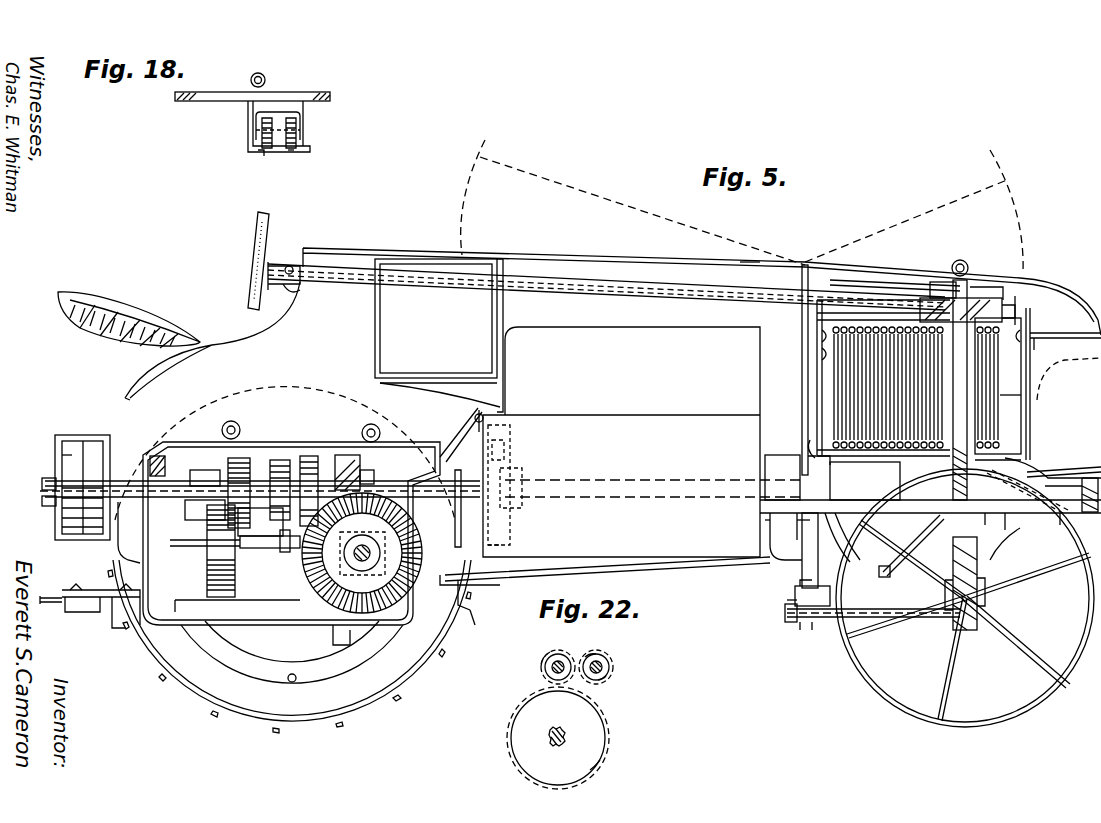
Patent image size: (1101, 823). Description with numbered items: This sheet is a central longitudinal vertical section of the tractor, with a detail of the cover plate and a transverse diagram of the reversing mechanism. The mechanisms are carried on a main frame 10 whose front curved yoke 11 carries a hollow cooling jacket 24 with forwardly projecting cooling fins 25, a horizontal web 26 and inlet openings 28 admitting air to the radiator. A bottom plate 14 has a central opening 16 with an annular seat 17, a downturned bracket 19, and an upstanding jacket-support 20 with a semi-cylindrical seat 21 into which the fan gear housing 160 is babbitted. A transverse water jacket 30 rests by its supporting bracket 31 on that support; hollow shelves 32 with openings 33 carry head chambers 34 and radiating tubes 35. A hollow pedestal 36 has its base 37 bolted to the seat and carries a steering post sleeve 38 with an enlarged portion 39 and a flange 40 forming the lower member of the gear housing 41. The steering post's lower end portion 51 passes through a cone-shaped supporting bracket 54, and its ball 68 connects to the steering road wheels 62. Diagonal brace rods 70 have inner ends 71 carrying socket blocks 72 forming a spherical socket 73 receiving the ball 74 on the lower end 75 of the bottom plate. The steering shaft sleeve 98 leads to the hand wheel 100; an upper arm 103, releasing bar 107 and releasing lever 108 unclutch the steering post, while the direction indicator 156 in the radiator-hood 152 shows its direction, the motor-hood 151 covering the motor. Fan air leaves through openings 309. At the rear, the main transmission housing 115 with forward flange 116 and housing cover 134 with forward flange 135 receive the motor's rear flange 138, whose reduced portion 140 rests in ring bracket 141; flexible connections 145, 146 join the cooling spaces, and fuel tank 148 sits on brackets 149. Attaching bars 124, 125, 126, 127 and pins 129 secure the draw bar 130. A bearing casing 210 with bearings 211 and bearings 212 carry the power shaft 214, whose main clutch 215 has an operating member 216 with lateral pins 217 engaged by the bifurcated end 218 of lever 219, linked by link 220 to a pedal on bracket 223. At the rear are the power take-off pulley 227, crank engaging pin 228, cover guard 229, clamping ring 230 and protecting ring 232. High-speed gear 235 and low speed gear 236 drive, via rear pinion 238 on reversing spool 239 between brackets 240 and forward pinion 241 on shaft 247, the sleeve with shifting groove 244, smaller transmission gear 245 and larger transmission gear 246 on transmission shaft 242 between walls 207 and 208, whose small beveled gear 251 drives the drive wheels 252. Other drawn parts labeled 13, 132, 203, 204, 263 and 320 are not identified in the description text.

In FIG. 5, the main frame 10 is at (773, 515).
In FIG. 5, the front curved yoke 11 is at (1085, 496).
In FIG. 5, the fender 13 is at (1053, 485).
In FIG. 5, the bottom plate 14 is at (1062, 514).
In FIG. 5, the central opening 16 is at (1006, 530).
In FIG. 5, the annular seat 17 is at (1030, 514).
In FIG. 5, the downturned bracket 19 is at (802, 568).
In FIG. 5, the upstanding jacket-support 20 is at (800, 518).
In FIG. 5, the semi-cylindrical seat 21 is at (795, 535).
In FIG. 5, the cooling jacket 24 is at (1031, 412).
In FIG. 5, the cooling fins 25 is at (1090, 440).
In FIG. 5, the horizontal web 26 is at (1050, 360).
In FIG. 5, the inlet openings 28 is at (1085, 336).
In FIG. 5, the water jacket 30 is at (815, 380).
In FIG. 5, the supporting bracket 31 is at (810, 456).
In FIG. 5, the hollow shelves 32 is at (817, 350).
In FIG. 5, the openings 33 is at (817, 332).
In FIG. 5, the head chambers 34 is at (880, 310).
In FIG. 5, the radiating tubes 35 is at (1022, 396).
In FIG. 5, the hollow pedestal 36 is at (998, 462).
In FIG. 5, the base 37 is at (985, 514).
In FIG. 5, the steering post sleeve 38 is at (1000, 378).
In FIG. 5, the enlarged portion 39 is at (1027, 476).
In FIG. 5, the flange 40 is at (1016, 308).
In FIG. 5, the gear housing 41 is at (1020, 298).
In FIG. 5, the lower end portion 51 is at (935, 522).
In FIG. 5, the cone-shaped supporting bracket 54 is at (1000, 552).
In FIG. 5, the steering road wheels 62 is at (1090, 640).
In FIG. 5, the ball 68 is at (886, 578).
In FIG. 5, the diagonal brace rods 70 is at (940, 618).
In FIG. 5, the inner ends 71 is at (788, 622).
In FIG. 5, the socket blocks 72 is at (808, 623).
In FIG. 5, the spherical socket 73 is at (830, 592).
In FIG. 5, the ball 74 is at (790, 603).
In FIG. 5, the lower end 75 is at (798, 586).
In FIG. 5, the steering shaft sleeve 98 is at (289, 265).
In FIG. 5, the steering hand wheel 100 is at (267, 228).
In FIG. 5, the upper arm 103 is at (936, 283).
In FIG. 5, the releasing bar 107 is at (876, 282).
In FIG. 5, the releasing lever 108 is at (284, 284).
In FIG. 5, the main transmission housing 115 is at (400, 612).
In FIG. 5, the forward flange 116 is at (478, 586).
In FIG. 5, the upper front attaching bar 124 is at (128, 591).
In FIG. 5, the lower front attaching bar 125 is at (102, 600).
In FIG. 5, the upper rear attaching bar 126 is at (75, 585).
In FIG. 5, the lower rear attaching bar 127 is at (70, 604).
In FIG. 5, the pins 129 is at (124, 585).
In FIG. 5, the draw bar 130 is at (112, 614).
In FIG. 5, the battery support box 132 is at (865, 481).
In FIG. 5, the housing cover 134 is at (309, 456).
In FIG. 5, the forward flange 135 is at (470, 412).
In FIG. 5, the rear flange 138 is at (495, 578).
In FIG. 5, the reduced portion 140 is at (766, 462).
In FIG. 5, the ring bracket 141 is at (812, 440).
In FIG. 5, the flexible connection 145 is at (745, 300).
In FIG. 5, the flexible connection 146 is at (860, 535).
In FIG. 5, the fuel tank 148 is at (439, 335).
In FIG. 5, the brackets 149 is at (470, 385).
In FIG. 5, the motor-hood 151 is at (758, 266).
In FIG. 5, the radiator-hood 152 is at (975, 278).
In FIG. 5, the direction indicator 156 is at (963, 262).
In FIG. 5, the fan gear housing 160 is at (370, 252).
In FIG. 5, the bolt 203 is at (236, 419).
In FIG. 5, the bolt 204 is at (380, 432).
In FIG. 5, the forward wall 207 is at (278, 512).
In FIG. 5, the rear wall 208 is at (200, 518).
In FIG. 5, the bearing casing 210 is at (150, 458).
In FIG. 5, the bearings 211 is at (190, 470).
In FIG. 5, the bearings 212 is at (345, 455).
In FIG. 22, the power shaft 214 is at (550, 665).
In FIG. 5, the power shaft 214 is at (366, 470).
In FIG. 5, the main clutch 215 is at (505, 548).
In FIG. 5, the operating member 216 is at (508, 460).
In FIG. 5, the lateral pins 217 is at (458, 475).
In FIG. 5, the bifurcated end 218 is at (508, 503).
In FIG. 5, the lever 219 is at (500, 520).
In FIG. 5, the link 220 is at (460, 598).
In FIG. 5, the bracket 223 is at (462, 608).
In FIG. 5, the power take-off pulley 227 is at (68, 458).
In FIG. 5, the crank engaging pin 228 is at (46, 504).
In FIG. 5, the cover guard 229 is at (84, 440).
In FIG. 5, the clamping ring 230 is at (120, 540).
In FIG. 5, the protecting ring 232 is at (44, 484).
In FIG. 5, the high-speed gear 235 is at (205, 430).
In FIG. 22, the low speed gear 236 is at (540, 672).
In FIG. 5, the low speed gear 236 is at (245, 458).
In FIG. 18, the rear pinion 238 is at (264, 152).
In FIG. 22, the rear pinion 238 is at (601, 682).
In FIG. 18, the reversing spool 239 is at (289, 150).
In FIG. 22, the reversing spool 239 is at (590, 661).
In FIG. 18, the brackets 240 is at (246, 104).
In FIG. 5, the forward pinion 241 is at (282, 460).
In FIG. 22, the transmission shaft 242 is at (562, 747).
In FIG. 5, the transmission shaft 242 is at (262, 550).
In FIG. 5, the shifting groove 244 is at (280, 540).
In FIG. 5, the smaller transmission gear 245 is at (208, 598).
In FIG. 22, the larger transmission gear 246 is at (603, 752).
In FIG. 5, the larger transmission gear 246 is at (232, 598).
In FIG. 22, the shaft 247 is at (601, 669).
In FIG. 5, the small beveled gear 251 is at (346, 562).
In FIG. 5, the drive wheels 252 is at (356, 690).
In FIG. 5, the gear 263 is at (205, 560).
In FIG. 5, the openings 309 is at (845, 540).
In FIG. 5, the foot bracket 320 is at (350, 638).